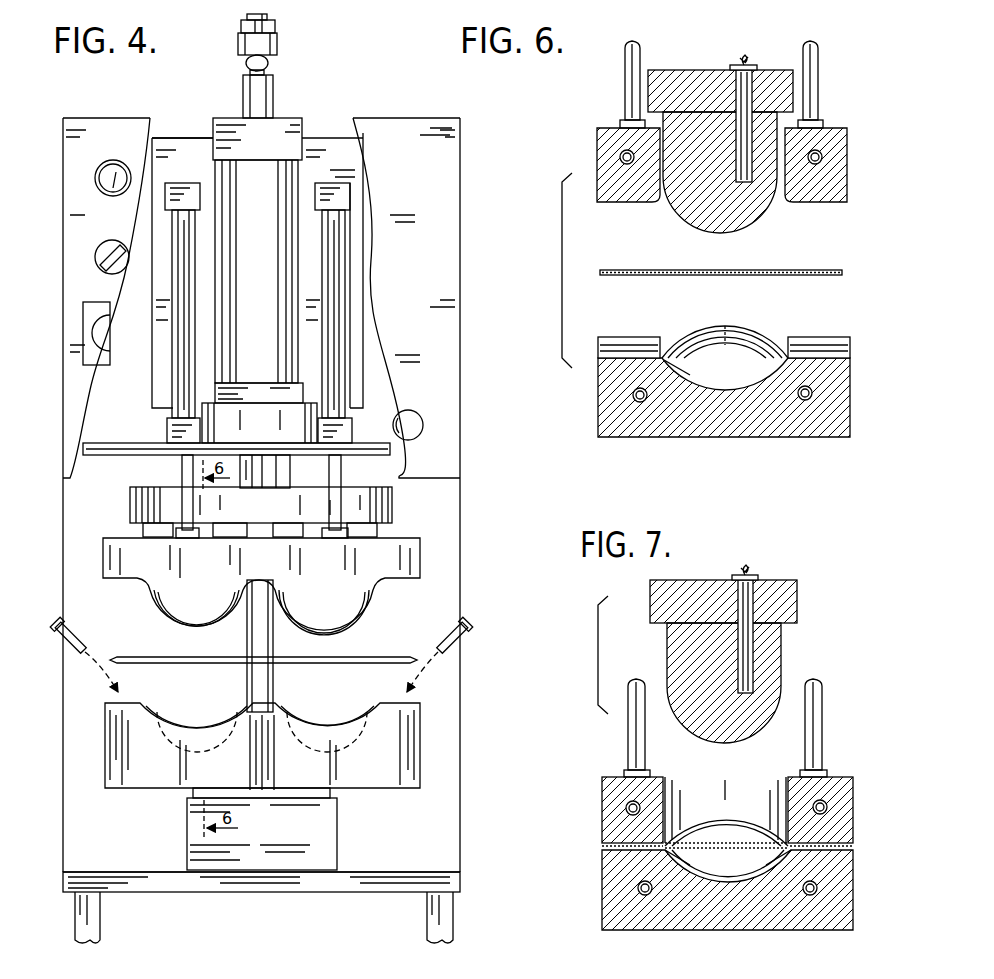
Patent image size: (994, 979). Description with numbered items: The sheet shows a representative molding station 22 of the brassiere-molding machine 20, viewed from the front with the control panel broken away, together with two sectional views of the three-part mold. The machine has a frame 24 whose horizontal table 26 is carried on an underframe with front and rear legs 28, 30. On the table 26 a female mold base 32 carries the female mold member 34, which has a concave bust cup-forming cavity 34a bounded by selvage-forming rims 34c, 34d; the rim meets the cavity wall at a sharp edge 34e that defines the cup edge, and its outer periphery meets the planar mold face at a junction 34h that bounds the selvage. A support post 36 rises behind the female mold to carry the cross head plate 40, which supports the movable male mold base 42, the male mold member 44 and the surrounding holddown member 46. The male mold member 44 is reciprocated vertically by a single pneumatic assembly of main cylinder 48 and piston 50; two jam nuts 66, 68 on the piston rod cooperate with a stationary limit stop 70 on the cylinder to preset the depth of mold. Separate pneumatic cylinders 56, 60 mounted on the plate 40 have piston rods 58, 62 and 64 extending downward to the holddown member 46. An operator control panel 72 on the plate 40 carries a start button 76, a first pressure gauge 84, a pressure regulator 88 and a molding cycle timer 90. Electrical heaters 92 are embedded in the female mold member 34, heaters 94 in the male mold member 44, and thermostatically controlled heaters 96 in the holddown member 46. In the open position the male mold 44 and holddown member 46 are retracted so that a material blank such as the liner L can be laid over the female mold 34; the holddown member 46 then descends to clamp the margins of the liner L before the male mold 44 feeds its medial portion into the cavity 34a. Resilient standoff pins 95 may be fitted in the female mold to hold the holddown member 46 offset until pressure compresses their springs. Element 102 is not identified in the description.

In FIG. 4, the machine for molding brassiere cups 20 is at (476, 378).
In FIG. 4, the molding station 22 is at (316, 156).
In FIG. 4, the support or frame 24 is at (437, 847).
In FIG. 4, the horizontally-extending table 26 is at (380, 886).
In FIG. 4, the front legs 28 is at (98, 930).
In FIG. 4, the rear legs 30 is at (264, 430).
In FIG. 4, the female mold base 32 is at (338, 837).
In FIG. 4, the female mold member 34 is at (300, 734).
In FIG. 6, the female mold member 34 is at (735, 385).
In FIG. 7, the female mold member 34 is at (727, 908).
In FIG. 6, the bust cup-forming cavity 34a is at (770, 360).
In FIG. 7, the bust cup-forming cavity 34a is at (740, 882).
In FIG. 4, the selvage-forming rim 34c is at (178, 718).
In FIG. 6, the selvage-forming rim 34c is at (660, 357).
In FIG. 7, the selvage-forming rim 34c is at (680, 856).
In FIG. 4, the selvage-forming rim 34d is at (326, 718).
In FIG. 6, the sharp edge 34e is at (667, 352).
In FIG. 6, the junction 34h is at (800, 356).
In FIG. 4, the support post 36 is at (272, 642).
In FIG. 4, the cross head plate 40 is at (107, 446).
In FIG. 4, the male mold base 42 is at (392, 505).
In FIG. 6, the male mold base 42 is at (672, 72).
In FIG. 7, the male mold base 42 is at (798, 588).
In FIG. 4, the male mold member 44 is at (160, 612).
In FIG. 6, the male mold member 44 is at (700, 214).
In FIG. 7, the male mold member 44 is at (782, 650).
In FIG. 4, the holddown member 46 is at (410, 560).
In FIG. 6, the holddown member 46 is at (600, 138).
In FIG. 7, the holddown member 46 is at (606, 797).
In FIG. 4, the main cylinder 48 is at (263, 272).
In FIG. 4, the piston 50 is at (247, 62).
In FIG. 4, the cylinder 56 is at (345, 297).
In FIG. 4, the piston rod 58 is at (342, 470).
In FIG. 4, the cylinder 60 is at (180, 320).
In FIG. 4, the piston rod 62 is at (182, 466).
In FIG. 6, the piston rod 62 is at (622, 62).
In FIG. 7, the piston rod 62 is at (628, 727).
In FIG. 6, the piston rod 64 is at (820, 68).
In FIG. 7, the piston rod 64 is at (824, 700).
In FIG. 4, the jam nut 66 is at (276, 24).
In FIG. 4, the jam nut 68 is at (278, 47).
In FIG. 4, the stationary limit stop 70 is at (275, 97).
In FIG. 4, the operator control panel 72 is at (424, 131).
In FIG. 4, the start button 76 is at (416, 414).
In FIG. 4, the first pressure gauge 84 is at (101, 168).
In FIG. 4, the pressure regulator 88 is at (104, 243).
In FIG. 4, the molding cycle timer 90 is at (84, 325).
In FIG. 6, the electrical heaters 92 is at (633, 397).
In FIG. 7, the electrical heaters 92 is at (638, 890).
In FIG. 6, the electrical heaters 94 is at (750, 80).
In FIG. 7, the electrical heaters 94 is at (754, 592).
In FIG. 4, the standoff pin 95 is at (62, 645).
In FIG. 6, the heaters 96 is at (822, 156).
In FIG. 7, the heaters 96 is at (827, 808).
In FIG. 4, the inner frame 102 is at (176, 148).
In FIG. 4, the liner L is at (368, 657).
In FIG. 6, the liner L is at (797, 270).
In FIG. 7, the liner L is at (708, 838).